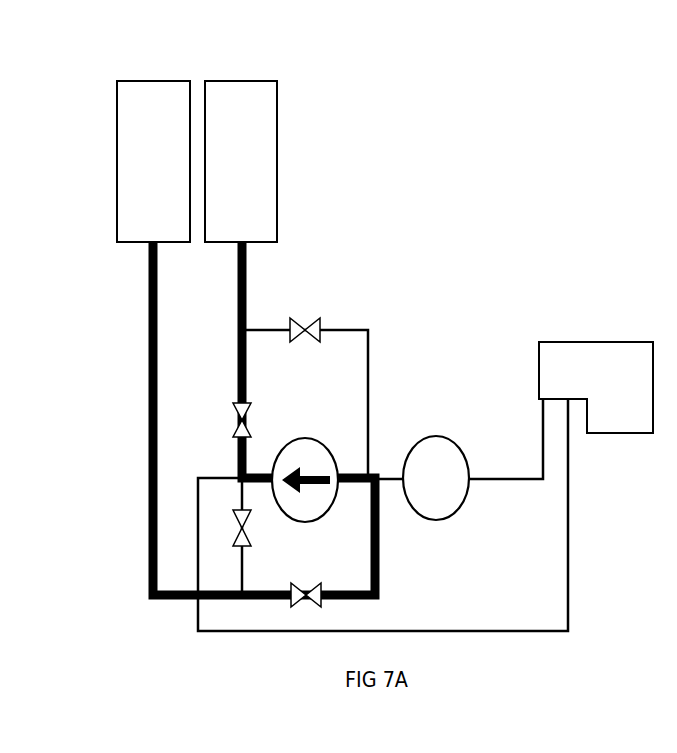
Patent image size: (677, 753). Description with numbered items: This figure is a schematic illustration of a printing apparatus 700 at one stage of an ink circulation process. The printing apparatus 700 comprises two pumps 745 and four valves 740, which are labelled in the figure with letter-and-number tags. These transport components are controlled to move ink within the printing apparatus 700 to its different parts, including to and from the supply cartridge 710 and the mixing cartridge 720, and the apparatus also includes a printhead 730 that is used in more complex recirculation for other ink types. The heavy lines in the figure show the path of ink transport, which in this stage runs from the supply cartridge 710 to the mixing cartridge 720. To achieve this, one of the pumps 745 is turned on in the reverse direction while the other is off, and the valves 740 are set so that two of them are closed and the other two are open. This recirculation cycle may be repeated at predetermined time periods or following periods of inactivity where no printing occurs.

The printing apparatus 700 is at (517, 130).
The supply cartridge 710 is at (117, 81).
The mixing cartridge 720 is at (282, 83).
The printhead 730 is at (625, 340).
The valves 740 is at (318, 312).
The pumps 745 is at (443, 435).